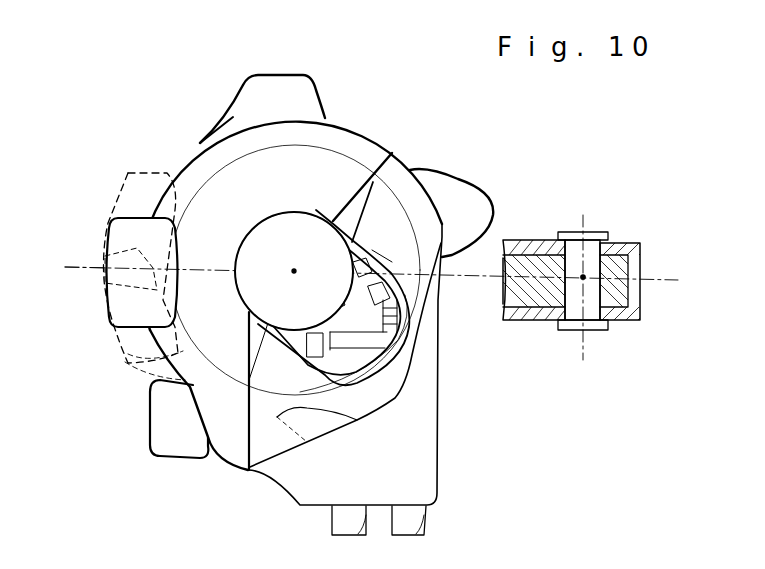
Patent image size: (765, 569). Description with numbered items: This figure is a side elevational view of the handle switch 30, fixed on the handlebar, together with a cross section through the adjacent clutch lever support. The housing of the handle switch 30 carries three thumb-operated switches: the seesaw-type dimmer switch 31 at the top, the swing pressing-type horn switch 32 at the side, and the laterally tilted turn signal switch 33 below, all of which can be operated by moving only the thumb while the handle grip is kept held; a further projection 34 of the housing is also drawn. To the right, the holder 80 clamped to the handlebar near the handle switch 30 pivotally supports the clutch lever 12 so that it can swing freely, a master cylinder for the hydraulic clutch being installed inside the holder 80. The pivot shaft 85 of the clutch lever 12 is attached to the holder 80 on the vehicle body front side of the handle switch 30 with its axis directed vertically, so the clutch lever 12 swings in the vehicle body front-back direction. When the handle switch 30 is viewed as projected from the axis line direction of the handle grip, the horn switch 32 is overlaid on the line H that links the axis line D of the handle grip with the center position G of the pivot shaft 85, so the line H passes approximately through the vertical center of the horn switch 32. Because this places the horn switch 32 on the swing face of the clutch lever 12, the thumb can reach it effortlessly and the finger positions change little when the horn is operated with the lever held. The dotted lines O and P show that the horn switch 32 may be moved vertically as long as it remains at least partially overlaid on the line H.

The handle switch 30 is at (155, 99).
The dimmer switch 31 is at (283, 92).
The horn switch 32 is at (120, 242).
The turn signal switch 33 is at (152, 425).
The side projection 34 is at (458, 197).
The holder 80 is at (527, 240).
The pivot shaft 85 is at (575, 232).
The clutch lever 12 is at (535, 294).
The axis line of the handle grip D is at (294, 271).
The dotted line O is at (118, 190).
The line H is at (128, 354).
The dotted line P is at (140, 366).
The center position of the pivot shaft G is at (586, 282).